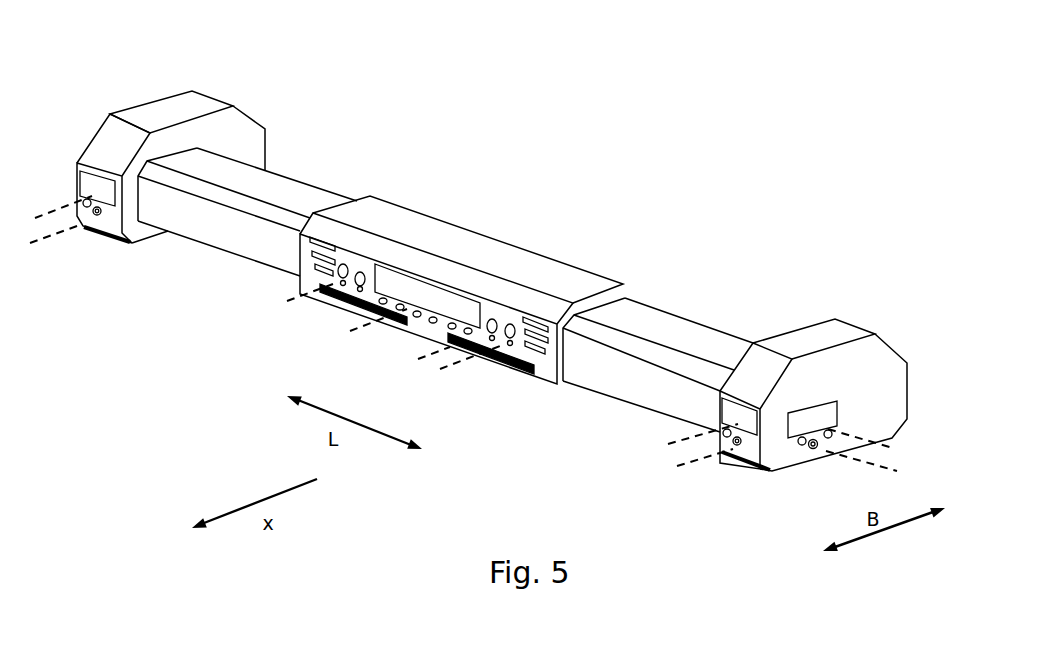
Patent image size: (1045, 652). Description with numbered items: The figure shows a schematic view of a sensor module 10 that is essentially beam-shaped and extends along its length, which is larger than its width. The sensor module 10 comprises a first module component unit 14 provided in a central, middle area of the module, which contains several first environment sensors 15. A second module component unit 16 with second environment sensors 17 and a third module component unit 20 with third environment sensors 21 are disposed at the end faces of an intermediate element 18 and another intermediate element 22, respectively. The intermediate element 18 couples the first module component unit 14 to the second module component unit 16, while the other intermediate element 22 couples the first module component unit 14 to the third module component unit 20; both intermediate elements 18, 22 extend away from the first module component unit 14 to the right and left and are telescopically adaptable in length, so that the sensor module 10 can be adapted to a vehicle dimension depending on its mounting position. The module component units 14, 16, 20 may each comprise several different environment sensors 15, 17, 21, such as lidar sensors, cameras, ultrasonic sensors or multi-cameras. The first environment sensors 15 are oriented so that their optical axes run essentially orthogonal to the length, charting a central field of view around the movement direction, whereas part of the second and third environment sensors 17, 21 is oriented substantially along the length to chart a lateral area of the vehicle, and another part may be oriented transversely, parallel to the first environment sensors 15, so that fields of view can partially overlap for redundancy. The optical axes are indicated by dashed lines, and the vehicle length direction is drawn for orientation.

The sensor module 10 is at (499, 195).
The first module component unit 14 is at (443, 232).
The first environment sensor 15 is at (343, 272).
The second module component unit 16 is at (832, 330).
The second environment sensor 17 is at (737, 440).
The intermediate element 18 is at (697, 340).
The third module component unit 20 is at (177, 107).
The third environment sensor 21 is at (93, 220).
The other intermediate element 22 is at (285, 190).